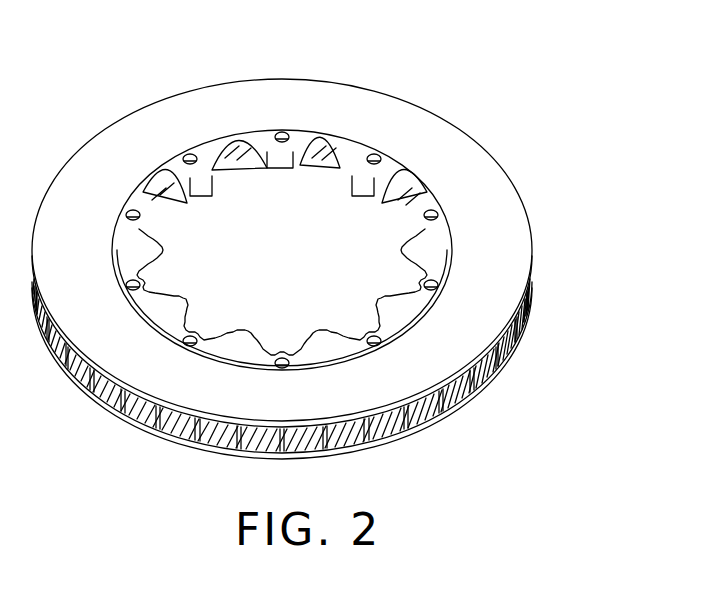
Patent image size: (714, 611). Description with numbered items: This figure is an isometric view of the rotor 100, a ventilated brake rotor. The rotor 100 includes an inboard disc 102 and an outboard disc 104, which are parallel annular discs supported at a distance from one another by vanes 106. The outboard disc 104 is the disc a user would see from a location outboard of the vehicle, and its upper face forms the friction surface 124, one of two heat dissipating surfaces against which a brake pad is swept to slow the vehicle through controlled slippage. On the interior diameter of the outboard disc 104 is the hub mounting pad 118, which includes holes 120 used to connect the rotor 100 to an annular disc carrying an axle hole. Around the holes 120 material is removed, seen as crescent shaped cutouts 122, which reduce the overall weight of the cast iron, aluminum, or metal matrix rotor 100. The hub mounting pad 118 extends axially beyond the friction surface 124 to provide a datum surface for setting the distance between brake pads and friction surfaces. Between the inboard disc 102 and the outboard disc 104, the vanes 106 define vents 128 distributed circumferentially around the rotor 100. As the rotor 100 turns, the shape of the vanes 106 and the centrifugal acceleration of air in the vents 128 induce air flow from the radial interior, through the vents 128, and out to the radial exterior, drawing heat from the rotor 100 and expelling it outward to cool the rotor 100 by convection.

The rotor 100 is at (541, 119).
The inboard disc 102 is at (107, 407).
The outboard disc 104 is at (110, 125).
The vanes 106 is at (400, 431).
The hub mounting pad 118 is at (292, 133).
The holes 120 is at (437, 214).
The crescent shaped cutouts 122 is at (182, 188).
The friction surface 124 is at (96, 241).
The vents 128 is at (523, 331).